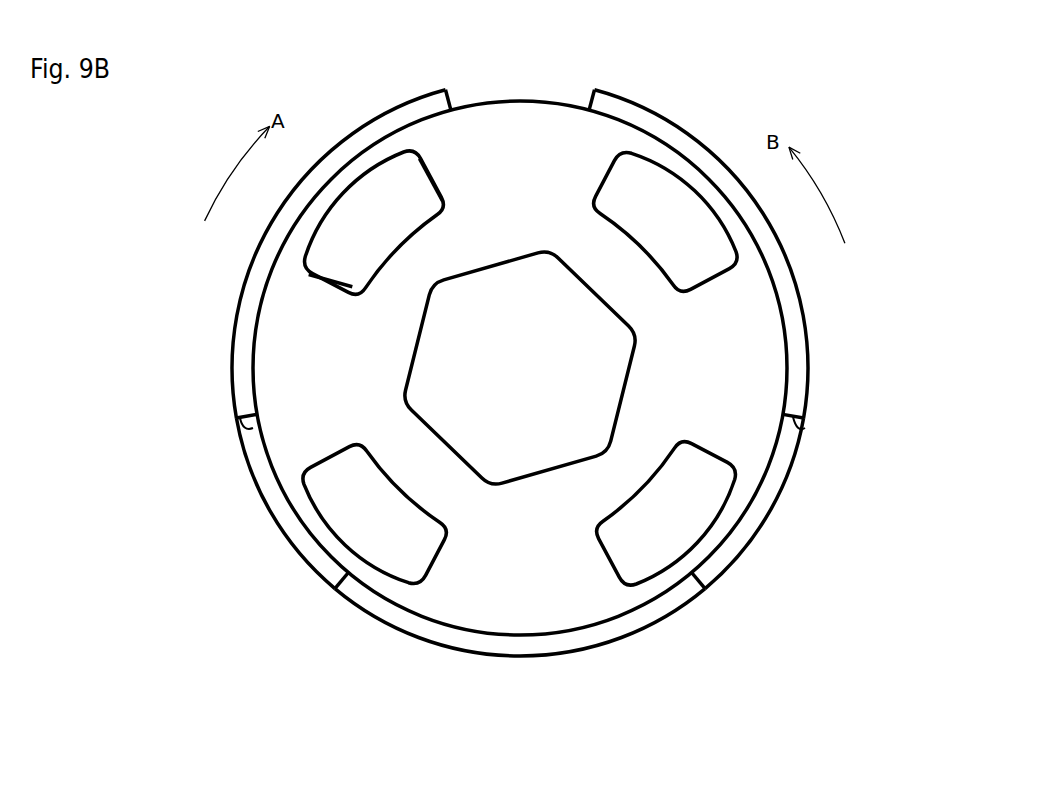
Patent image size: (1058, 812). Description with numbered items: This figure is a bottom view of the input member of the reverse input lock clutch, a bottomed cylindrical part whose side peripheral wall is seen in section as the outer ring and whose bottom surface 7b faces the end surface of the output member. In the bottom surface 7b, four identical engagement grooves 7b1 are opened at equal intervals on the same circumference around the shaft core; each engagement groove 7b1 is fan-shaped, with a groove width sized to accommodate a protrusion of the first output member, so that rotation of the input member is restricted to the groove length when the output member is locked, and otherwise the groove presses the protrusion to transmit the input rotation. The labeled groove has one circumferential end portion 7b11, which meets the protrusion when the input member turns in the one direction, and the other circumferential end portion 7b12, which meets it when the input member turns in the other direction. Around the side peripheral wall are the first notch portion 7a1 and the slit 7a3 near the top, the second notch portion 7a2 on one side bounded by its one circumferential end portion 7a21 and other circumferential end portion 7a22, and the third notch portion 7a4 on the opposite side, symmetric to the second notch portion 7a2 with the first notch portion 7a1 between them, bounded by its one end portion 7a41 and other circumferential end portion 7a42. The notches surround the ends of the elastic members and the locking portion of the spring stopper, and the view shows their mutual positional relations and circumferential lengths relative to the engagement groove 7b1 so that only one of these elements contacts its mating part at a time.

The first notch portion 7a1 is at (515, 100).
The second notch portion 7a2 is at (285, 508).
The one circumferential end portion of the second notch portion 7a21 is at (337, 582).
The other circumferential end portion of the second notch portion 7a22 is at (238, 428).
The slit 7a3 is at (582, 98).
The third notch portion 7a4 is at (763, 508).
The one end portion of the third notch portion 7a41 is at (707, 575).
The other circumferential end portion of the third notch portion 7a42 is at (797, 428).
The bottom surface 7b is at (740, 358).
The engagement groove 7b1 is at (363, 180).
The one circumferential end portion of the engagement groove 7b11 is at (323, 288).
The other circumferential end portion of the engagement groove 7b12 is at (440, 177).